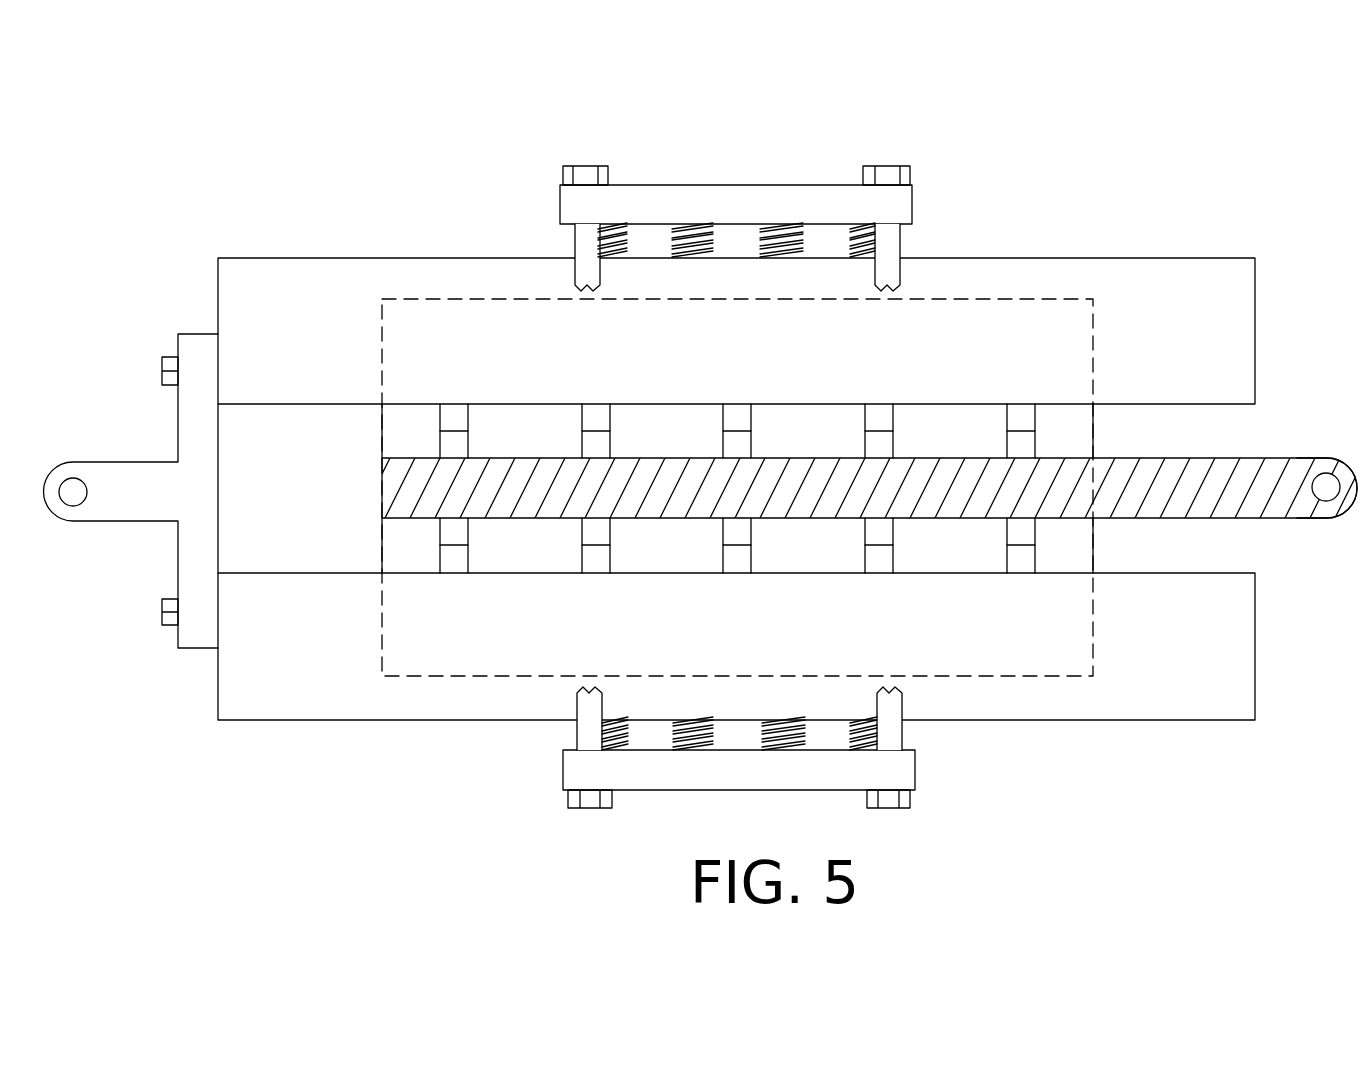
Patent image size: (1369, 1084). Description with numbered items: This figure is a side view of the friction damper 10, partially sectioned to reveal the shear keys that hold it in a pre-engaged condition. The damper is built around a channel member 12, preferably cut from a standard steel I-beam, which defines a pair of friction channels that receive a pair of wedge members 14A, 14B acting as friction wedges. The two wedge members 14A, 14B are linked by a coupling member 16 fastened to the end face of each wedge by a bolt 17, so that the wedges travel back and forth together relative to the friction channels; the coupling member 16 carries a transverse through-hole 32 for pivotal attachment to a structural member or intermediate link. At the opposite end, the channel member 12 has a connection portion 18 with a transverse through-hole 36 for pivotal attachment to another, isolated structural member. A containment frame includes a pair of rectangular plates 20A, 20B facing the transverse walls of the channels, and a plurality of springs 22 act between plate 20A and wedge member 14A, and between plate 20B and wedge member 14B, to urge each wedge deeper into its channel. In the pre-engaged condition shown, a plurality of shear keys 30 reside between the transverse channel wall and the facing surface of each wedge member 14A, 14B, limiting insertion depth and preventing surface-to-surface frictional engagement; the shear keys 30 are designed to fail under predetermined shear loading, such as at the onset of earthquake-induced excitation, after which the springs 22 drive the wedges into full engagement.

The friction damper 10 is at (368, 190).
The channel member 12 is at (382, 490).
The wedge member 14A is at (320, 258).
The wedge member 14B is at (325, 720).
The coupling member 16 is at (133, 522).
The bolt 17 is at (162, 371).
The connection portion 18 is at (1297, 508).
The rectangular plate 20A is at (668, 185).
The rectangular plate 20B is at (712, 790).
The springs 22 is at (627, 253).
The shear keys 30 is at (470, 425).
The transverse through-hole 32 is at (73, 506).
The transverse through-hole 36 is at (1327, 472).